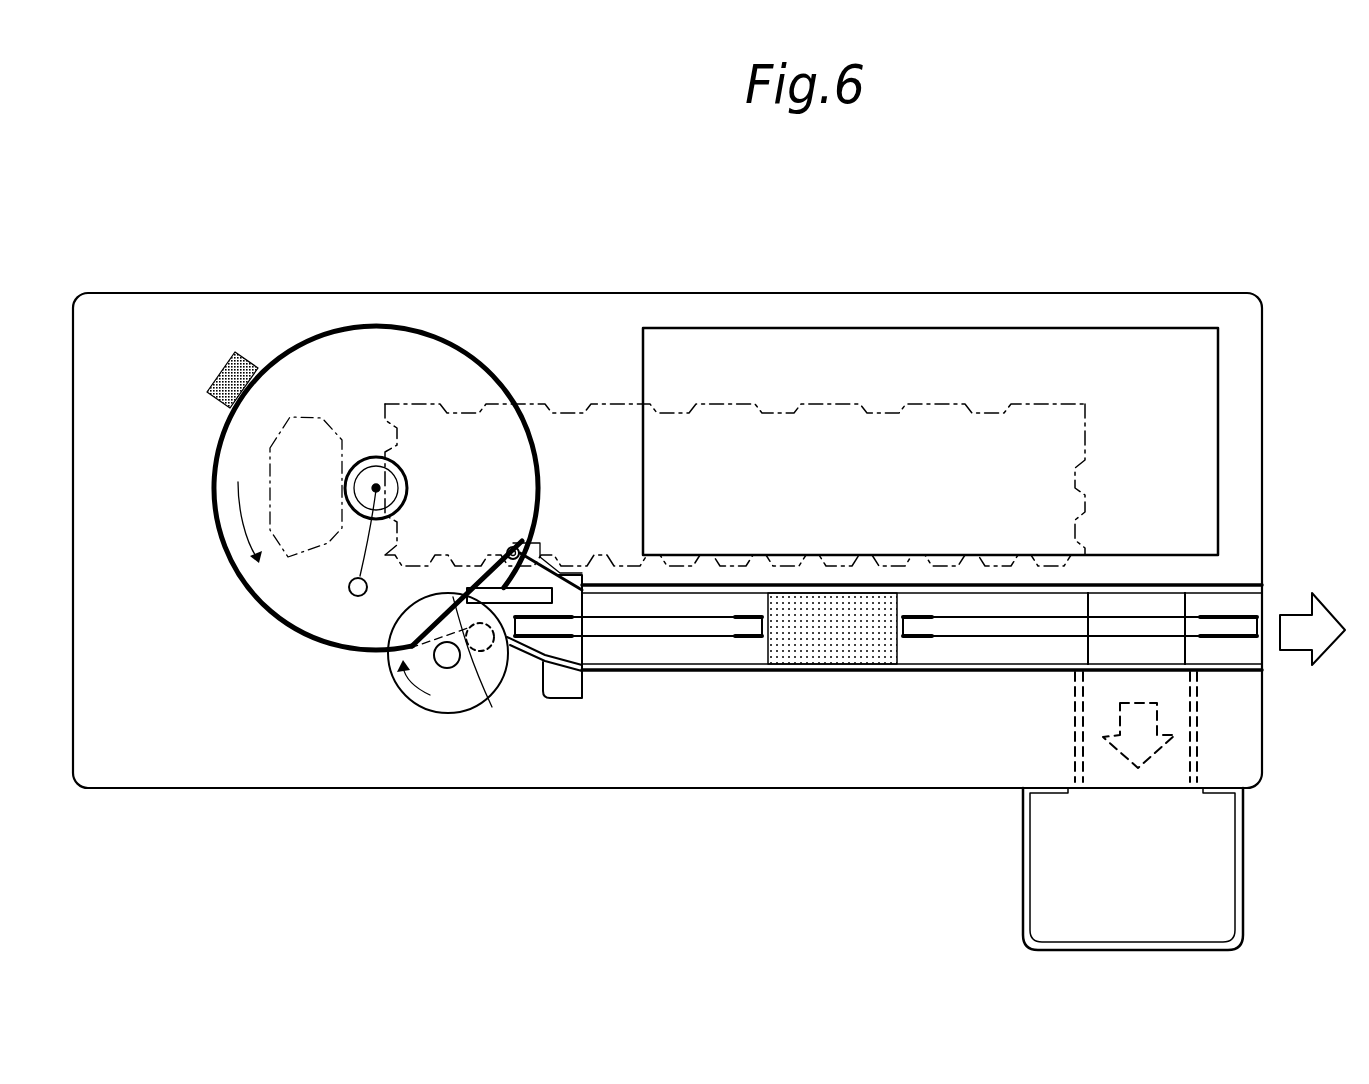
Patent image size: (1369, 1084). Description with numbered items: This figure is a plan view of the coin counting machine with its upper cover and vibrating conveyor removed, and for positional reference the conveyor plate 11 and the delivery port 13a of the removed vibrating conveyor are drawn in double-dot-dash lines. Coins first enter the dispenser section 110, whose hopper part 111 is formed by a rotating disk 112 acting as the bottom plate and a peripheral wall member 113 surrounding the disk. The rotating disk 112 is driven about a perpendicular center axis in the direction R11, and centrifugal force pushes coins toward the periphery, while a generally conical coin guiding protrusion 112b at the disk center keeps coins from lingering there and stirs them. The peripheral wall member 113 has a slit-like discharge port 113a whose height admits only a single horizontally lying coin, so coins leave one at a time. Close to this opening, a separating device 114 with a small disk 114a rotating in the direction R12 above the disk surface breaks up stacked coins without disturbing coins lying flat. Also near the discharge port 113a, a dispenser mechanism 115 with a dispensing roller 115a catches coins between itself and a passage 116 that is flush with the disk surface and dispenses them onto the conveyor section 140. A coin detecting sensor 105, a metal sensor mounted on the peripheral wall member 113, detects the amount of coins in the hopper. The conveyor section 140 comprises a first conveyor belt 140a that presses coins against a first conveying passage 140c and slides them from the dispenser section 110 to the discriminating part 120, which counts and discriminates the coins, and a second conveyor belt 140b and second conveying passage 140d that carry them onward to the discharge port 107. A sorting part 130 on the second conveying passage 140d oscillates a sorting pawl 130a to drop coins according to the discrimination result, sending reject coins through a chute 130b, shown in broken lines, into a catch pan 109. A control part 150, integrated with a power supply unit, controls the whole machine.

The conveyor plate 11 is at (866, 402).
The delivery port 13a is at (333, 428).
The coin detecting sensor 105 is at (222, 370).
The discharge port 107 is at (1272, 598).
The catch pan 109 is at (1038, 902).
The dispenser section 110 is at (338, 672).
The hopper part 111 is at (278, 341).
The rotating disk 112 is at (420, 364).
The coin guiding protrusion 112b is at (405, 472).
The peripheral wall member 113 is at (230, 645).
The discharge port 113a is at (462, 700).
The separating device 114 is at (436, 728).
The small disk 114a is at (462, 700).
The dispenser mechanism 115 is at (545, 575).
The dispensing roller 115a is at (571, 510).
The passage 116 is at (600, 666).
The discriminating part 120 is at (828, 686).
The sorting part 130 is at (1130, 578).
The sorting pawl 130a is at (1160, 605).
The chute 130b is at (1200, 722).
The conveyor section 140 is at (700, 680).
The first conveyor belt 140a is at (650, 628).
The second conveyor belt 140b is at (968, 628).
The first conveying passage 140c is at (735, 668).
The second conveying passage 140d is at (1020, 672).
The control part 150 is at (993, 325).
The rotation direction of rotating disk R11 is at (242, 522).
The rotation direction of small disk R12 is at (416, 692).